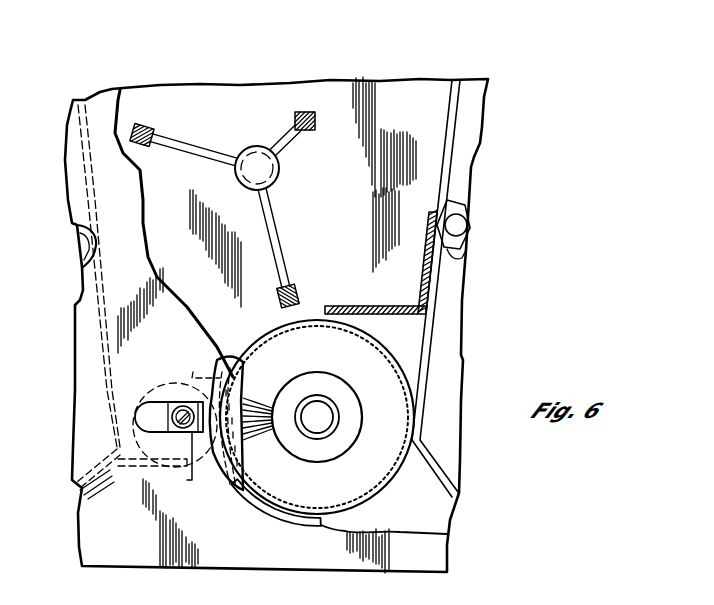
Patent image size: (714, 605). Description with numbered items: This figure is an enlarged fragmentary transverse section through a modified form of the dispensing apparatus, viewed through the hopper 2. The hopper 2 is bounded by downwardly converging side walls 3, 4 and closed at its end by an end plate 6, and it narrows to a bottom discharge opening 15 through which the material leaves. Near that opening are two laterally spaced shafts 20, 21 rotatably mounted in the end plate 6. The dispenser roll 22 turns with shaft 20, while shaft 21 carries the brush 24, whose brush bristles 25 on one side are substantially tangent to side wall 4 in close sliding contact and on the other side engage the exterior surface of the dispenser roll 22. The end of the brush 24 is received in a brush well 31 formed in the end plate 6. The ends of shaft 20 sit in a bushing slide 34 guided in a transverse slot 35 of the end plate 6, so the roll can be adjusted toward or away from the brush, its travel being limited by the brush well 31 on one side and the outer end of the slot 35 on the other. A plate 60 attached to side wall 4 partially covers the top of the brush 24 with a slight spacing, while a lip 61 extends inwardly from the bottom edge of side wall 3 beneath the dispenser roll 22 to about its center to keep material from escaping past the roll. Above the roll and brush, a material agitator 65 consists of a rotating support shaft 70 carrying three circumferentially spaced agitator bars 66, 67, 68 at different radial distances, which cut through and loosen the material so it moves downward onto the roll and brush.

The hopper 2 is at (190, 79).
The side wall 3 is at (90, 172).
The side wall 4 is at (430, 325).
The end plate 6 is at (113, 315).
The bottom discharge opening 15 is at (211, 475).
The shaft 20 is at (182, 405).
The shaft 21 is at (325, 427).
The dispenser roll 22 is at (193, 372).
The brush 24 is at (310, 500).
The brush bristles 25 is at (403, 466).
The brush well 31 is at (215, 365).
The bushing slide 34 is at (189, 481).
The transverse slot 35 is at (152, 395).
The plate 60 is at (362, 305).
The lip 61 is at (133, 470).
The material agitator 65 is at (275, 175).
The agitator bar 66 is at (303, 298).
The agitator bar 67 is at (137, 125).
The agitator bar 68 is at (304, 110).
The support shaft 70 is at (272, 170).